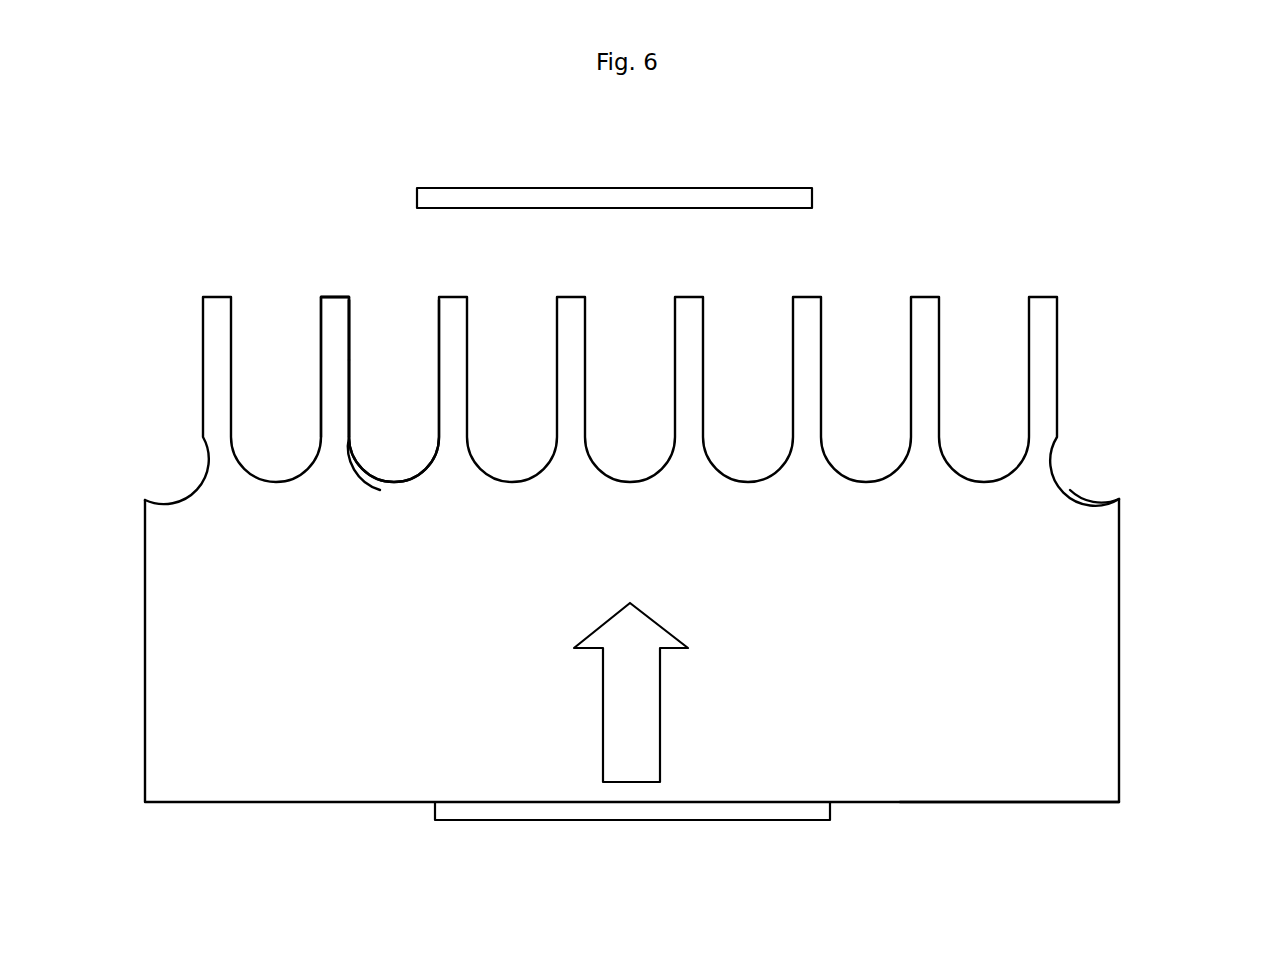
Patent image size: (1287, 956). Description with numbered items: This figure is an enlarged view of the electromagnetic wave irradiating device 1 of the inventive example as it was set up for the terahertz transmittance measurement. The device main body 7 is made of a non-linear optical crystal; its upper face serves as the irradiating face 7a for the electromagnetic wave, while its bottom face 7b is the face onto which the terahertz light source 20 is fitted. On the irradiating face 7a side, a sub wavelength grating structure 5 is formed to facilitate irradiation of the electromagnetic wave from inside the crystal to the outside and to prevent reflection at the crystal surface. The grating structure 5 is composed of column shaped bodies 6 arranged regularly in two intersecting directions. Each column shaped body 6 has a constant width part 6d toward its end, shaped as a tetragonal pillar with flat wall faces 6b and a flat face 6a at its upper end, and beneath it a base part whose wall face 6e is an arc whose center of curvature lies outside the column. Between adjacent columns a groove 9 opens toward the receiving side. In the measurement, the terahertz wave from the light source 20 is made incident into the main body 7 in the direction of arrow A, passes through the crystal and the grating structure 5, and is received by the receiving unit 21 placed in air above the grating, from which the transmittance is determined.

The heat sink 1 is at (684, 539).
The sub wavelength grating structure 5 is at (645, 360).
The column shaped body 6 is at (356, 358).
The flat face 6a is at (337, 295).
The wall face 6b is at (351, 384).
The constant width part 6d is at (351, 341).
The wall face of the base part 6e is at (362, 478).
The main body 7 is at (684, 647).
The irradiating face 7a is at (1100, 500).
The bottom face 7b is at (1068, 803).
The groove between fins 9 is at (423, 297).
The light source 20 is at (783, 808).
The receiving unit 21 is at (680, 203).
The arrow A is at (624, 712).